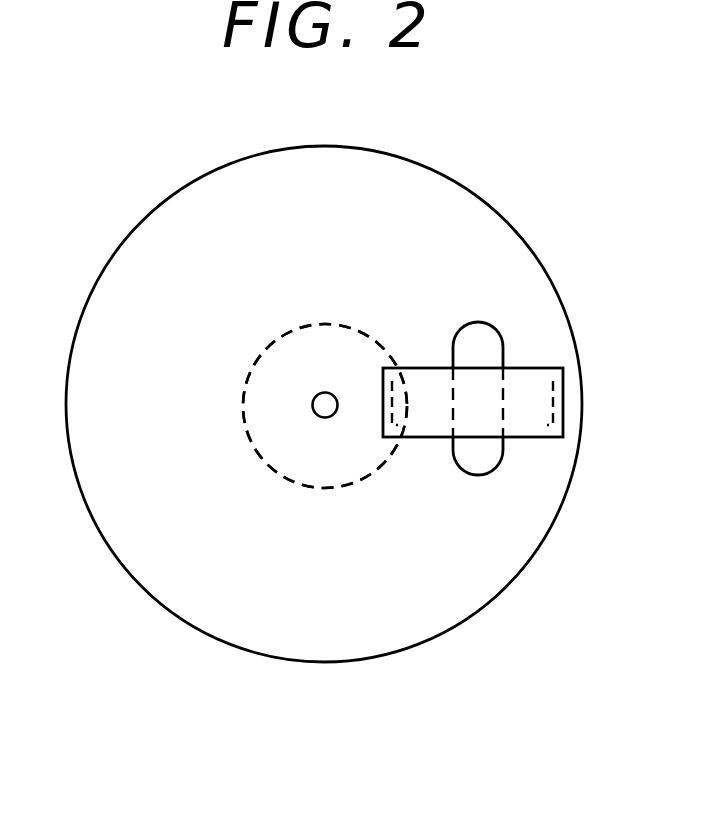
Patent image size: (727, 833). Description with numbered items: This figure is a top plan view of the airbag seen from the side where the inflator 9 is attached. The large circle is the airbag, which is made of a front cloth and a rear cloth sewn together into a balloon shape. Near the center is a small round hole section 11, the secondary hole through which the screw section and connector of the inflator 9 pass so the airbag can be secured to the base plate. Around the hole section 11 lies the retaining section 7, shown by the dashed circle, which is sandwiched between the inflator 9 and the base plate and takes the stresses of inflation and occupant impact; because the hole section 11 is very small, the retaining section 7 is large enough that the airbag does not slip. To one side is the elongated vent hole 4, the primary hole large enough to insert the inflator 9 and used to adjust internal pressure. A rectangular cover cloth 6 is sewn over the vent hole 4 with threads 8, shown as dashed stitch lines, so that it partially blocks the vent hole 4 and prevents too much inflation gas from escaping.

The vent hole 4 is at (487, 457).
The cover cloth 6 is at (532, 425).
The retaining section 7 is at (275, 377).
The threads 8 is at (392, 410).
The inflator 9 is at (262, 430).
The hole section 11 is at (330, 407).